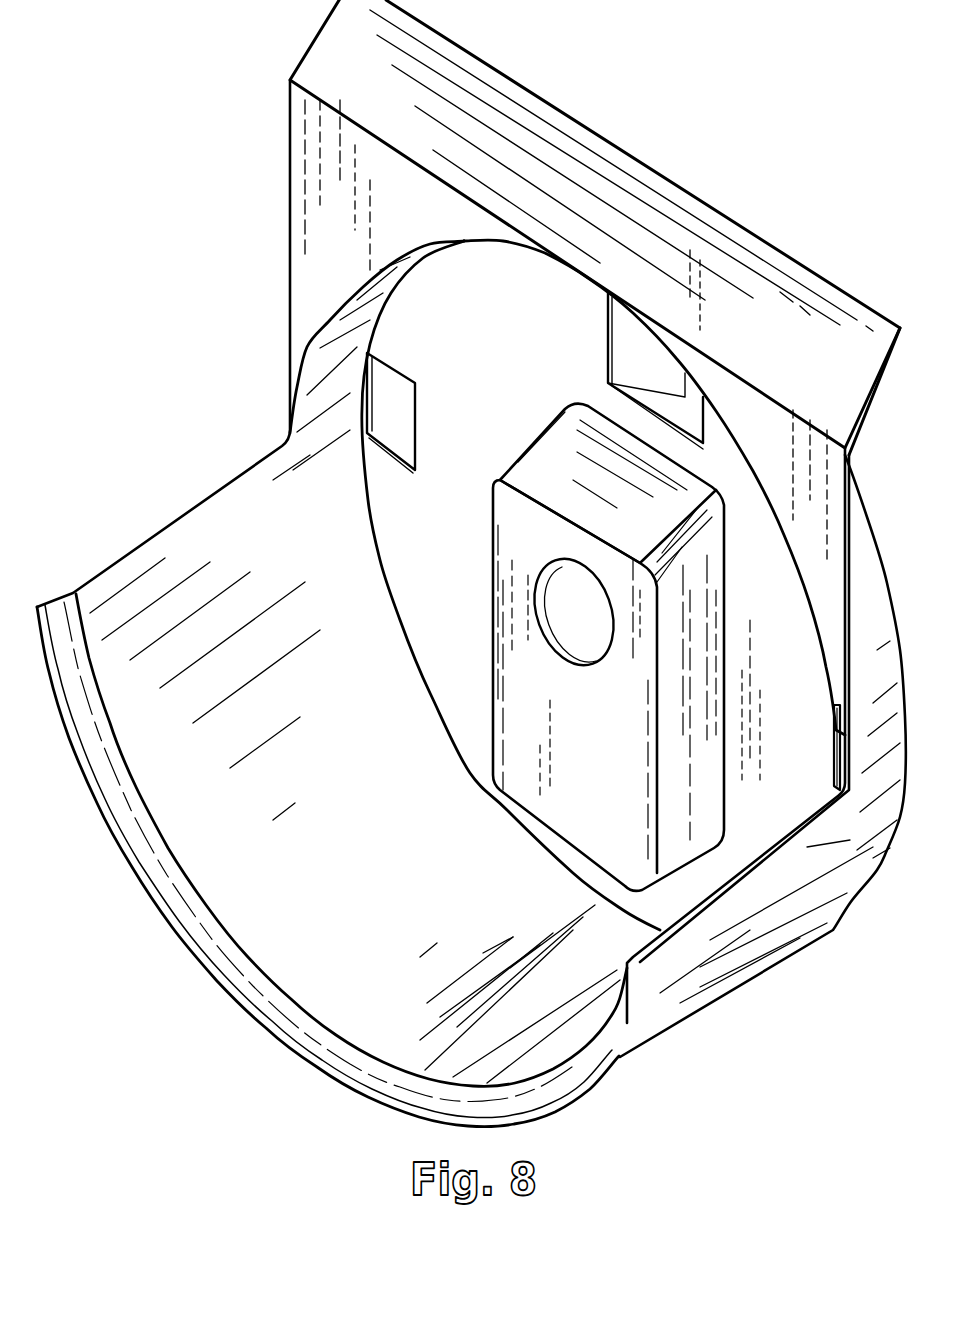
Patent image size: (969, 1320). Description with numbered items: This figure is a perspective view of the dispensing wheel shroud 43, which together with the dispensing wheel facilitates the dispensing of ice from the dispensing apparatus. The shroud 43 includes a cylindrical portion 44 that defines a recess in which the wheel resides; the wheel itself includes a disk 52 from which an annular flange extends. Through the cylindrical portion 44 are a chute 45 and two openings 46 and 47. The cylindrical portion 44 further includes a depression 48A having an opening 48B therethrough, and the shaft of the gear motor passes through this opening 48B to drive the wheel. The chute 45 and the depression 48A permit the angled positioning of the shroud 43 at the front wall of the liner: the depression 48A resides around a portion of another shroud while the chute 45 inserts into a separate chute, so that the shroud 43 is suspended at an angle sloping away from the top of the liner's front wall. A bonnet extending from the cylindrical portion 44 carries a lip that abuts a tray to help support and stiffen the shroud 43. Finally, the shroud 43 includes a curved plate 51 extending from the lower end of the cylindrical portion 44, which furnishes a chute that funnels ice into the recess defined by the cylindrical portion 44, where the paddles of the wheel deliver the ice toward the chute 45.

The shroud 43 is at (733, 1033).
The cylindrical portion 44 is at (888, 688).
The chute 45 is at (664, 376).
The opening 46 is at (405, 424).
The opening 47 is at (837, 760).
The depression 48A is at (589, 772).
The opening 48B is at (578, 646).
The curved plate 51 is at (396, 900).
The disk 52 is at (752, 342).